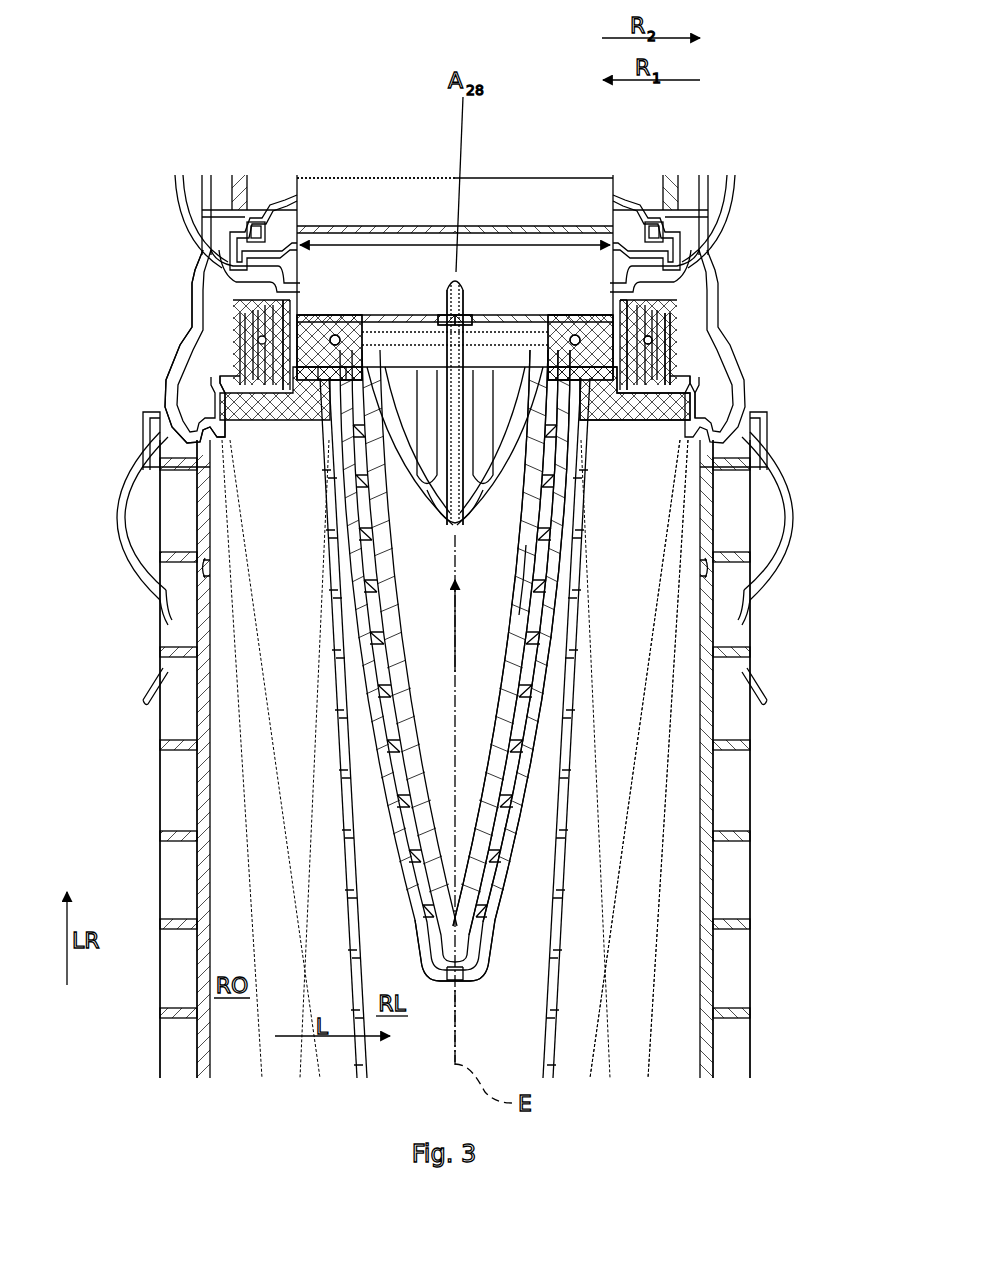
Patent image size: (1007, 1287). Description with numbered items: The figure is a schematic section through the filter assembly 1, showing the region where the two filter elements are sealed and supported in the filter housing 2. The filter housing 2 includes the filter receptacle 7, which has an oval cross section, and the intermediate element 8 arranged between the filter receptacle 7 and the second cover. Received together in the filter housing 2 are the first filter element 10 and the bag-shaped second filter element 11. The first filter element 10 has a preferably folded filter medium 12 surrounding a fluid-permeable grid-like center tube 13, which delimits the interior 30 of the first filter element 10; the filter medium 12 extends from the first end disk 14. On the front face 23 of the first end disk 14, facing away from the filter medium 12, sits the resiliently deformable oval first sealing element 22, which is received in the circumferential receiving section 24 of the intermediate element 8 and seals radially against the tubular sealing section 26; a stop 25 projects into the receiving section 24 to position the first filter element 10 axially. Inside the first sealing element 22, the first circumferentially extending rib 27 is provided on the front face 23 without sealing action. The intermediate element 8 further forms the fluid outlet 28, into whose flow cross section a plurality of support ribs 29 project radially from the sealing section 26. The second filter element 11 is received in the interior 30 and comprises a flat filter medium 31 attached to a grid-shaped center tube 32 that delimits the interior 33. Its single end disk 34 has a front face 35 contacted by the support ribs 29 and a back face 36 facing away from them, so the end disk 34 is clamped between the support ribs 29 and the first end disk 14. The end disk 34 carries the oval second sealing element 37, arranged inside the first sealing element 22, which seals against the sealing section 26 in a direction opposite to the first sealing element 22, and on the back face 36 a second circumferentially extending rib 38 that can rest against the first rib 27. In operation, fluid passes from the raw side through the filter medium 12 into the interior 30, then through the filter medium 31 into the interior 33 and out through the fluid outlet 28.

The filter assembly 1 is at (486, 142).
The filter housing 2 is at (116, 742).
The filter receptacle 7 is at (714, 880).
The intermediate element 8 is at (183, 336).
The first filter element 10 is at (667, 838).
The second filter element 11 is at (505, 905).
The filter medium 12 is at (650, 797).
The center tube 13 is at (566, 740).
The first end disk 14 is at (669, 424).
The first sealing element 22 is at (650, 338).
The front face 23 is at (662, 382).
The receiving section 24 is at (666, 360).
The stop 25 is at (650, 312).
The sealing section 26 is at (617, 320).
The first circumferentially extending rib 27 is at (316, 380).
The fluid outlet 28 is at (408, 236).
The support ribs 29 is at (336, 335).
The interior 30 is at (470, 1045).
The filter medium 31 is at (522, 603).
The center tube 32 is at (512, 562).
The interior 33 is at (470, 721).
The end disk 34 is at (475, 308).
The front face 35 is at (584, 316).
The back face 36 is at (326, 376).
The second sealing element 37 is at (286, 342).
The second circumferentially extending rib 38 is at (338, 340).